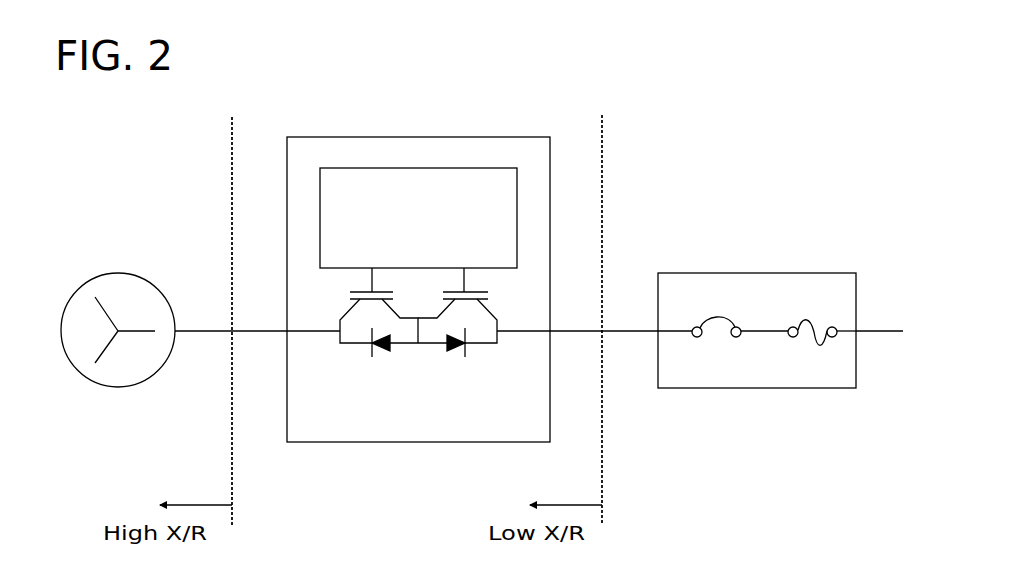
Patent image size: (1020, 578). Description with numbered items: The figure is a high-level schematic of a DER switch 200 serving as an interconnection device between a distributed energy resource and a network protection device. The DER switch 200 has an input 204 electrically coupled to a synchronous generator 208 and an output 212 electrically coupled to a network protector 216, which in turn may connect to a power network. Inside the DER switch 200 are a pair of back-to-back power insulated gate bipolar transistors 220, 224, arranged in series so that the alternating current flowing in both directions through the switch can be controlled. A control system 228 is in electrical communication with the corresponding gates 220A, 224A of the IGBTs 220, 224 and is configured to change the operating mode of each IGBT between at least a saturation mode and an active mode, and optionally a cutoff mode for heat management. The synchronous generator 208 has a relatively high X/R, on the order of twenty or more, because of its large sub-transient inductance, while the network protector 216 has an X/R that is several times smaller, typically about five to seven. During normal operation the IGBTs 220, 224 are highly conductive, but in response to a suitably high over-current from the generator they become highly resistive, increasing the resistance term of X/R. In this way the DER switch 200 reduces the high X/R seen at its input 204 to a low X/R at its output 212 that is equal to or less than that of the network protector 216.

The DER switch 200 is at (352, 78).
The input 204 is at (277, 320).
The synchronous generator 208 is at (80, 292).
The output 212 is at (558, 320).
The network protector 216 is at (697, 270).
The insulated gate bipolar transistor 220 is at (350, 343).
The gate 220A is at (391, 309).
The insulated gate bipolar transistor 224 is at (487, 343).
The gate 224A is at (445, 309).
The control system 228 is at (535, 107).